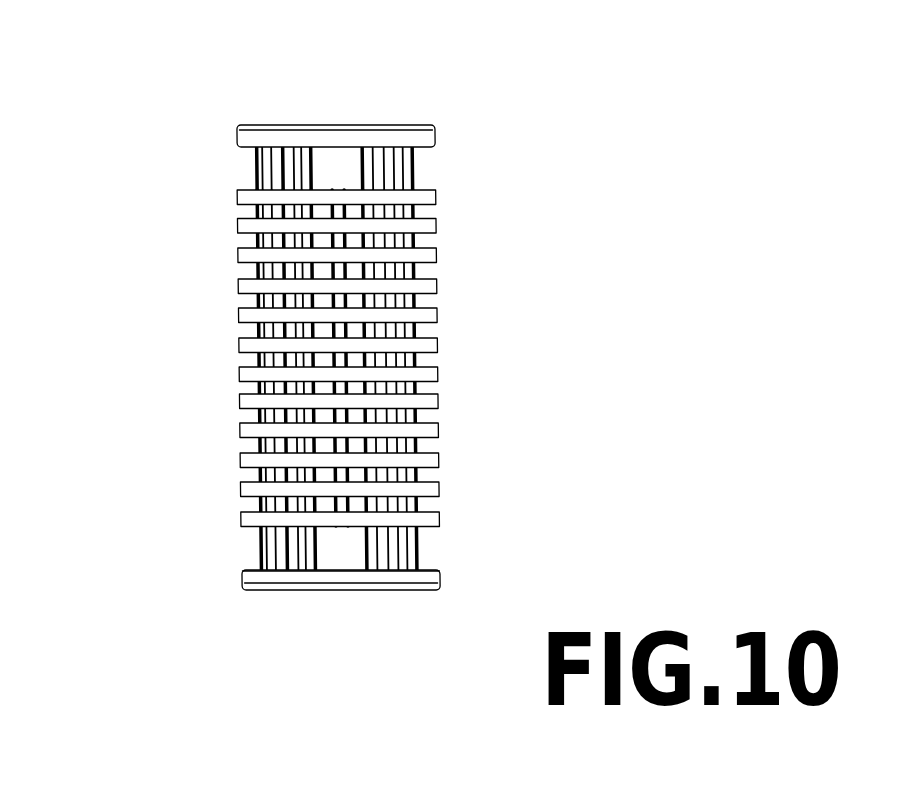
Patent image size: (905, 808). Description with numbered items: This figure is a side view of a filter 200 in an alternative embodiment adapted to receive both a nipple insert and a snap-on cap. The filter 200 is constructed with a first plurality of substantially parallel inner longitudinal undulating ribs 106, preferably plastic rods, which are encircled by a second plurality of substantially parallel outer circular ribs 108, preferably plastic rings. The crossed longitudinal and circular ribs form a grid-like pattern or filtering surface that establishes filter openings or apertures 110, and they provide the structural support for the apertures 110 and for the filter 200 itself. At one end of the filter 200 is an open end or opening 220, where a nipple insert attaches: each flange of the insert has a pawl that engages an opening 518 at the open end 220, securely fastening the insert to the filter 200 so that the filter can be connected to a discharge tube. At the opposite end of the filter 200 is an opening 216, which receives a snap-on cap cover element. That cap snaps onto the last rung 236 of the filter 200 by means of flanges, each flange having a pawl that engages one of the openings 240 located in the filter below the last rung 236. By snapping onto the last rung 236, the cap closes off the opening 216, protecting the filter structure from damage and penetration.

The filter 200 is at (352, 356).
The opening 220 is at (375, 125).
The opening 518 is at (348, 167).
The filter openings or apertures 110 is at (375, 243).
The inner longitudinal undulating ribs 106 is at (257, 326).
The outer circular ribs 108 is at (240, 430).
The openings 240 is at (338, 552).
The last rung 236 is at (263, 579).
The opening 216 is at (328, 590).